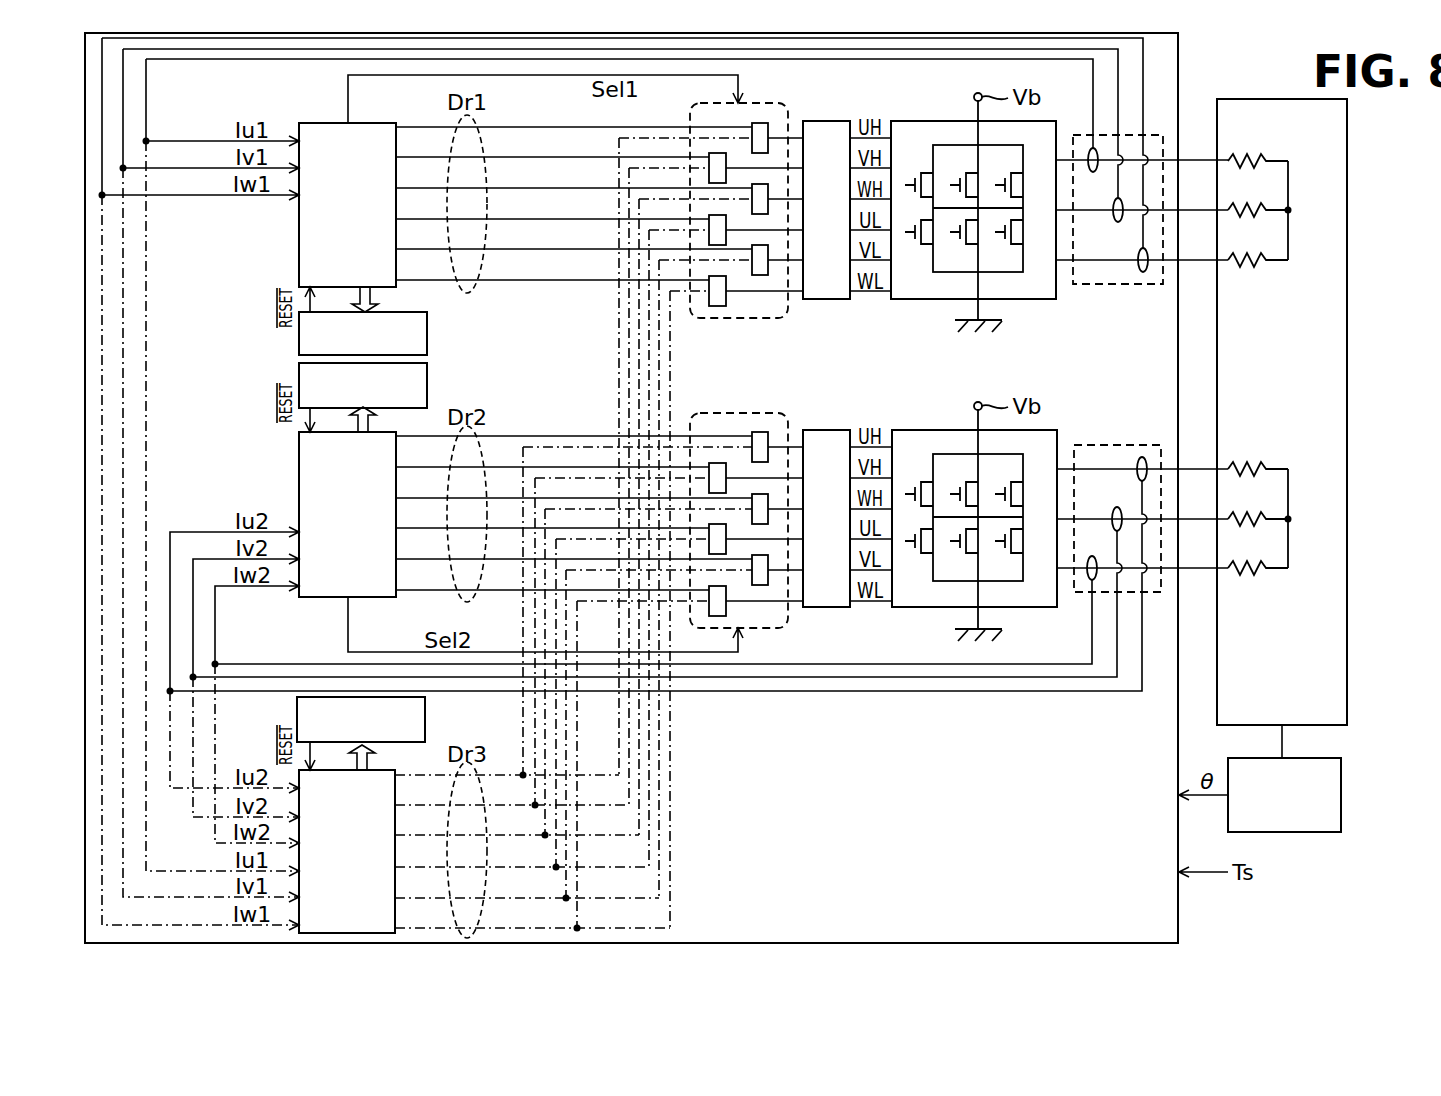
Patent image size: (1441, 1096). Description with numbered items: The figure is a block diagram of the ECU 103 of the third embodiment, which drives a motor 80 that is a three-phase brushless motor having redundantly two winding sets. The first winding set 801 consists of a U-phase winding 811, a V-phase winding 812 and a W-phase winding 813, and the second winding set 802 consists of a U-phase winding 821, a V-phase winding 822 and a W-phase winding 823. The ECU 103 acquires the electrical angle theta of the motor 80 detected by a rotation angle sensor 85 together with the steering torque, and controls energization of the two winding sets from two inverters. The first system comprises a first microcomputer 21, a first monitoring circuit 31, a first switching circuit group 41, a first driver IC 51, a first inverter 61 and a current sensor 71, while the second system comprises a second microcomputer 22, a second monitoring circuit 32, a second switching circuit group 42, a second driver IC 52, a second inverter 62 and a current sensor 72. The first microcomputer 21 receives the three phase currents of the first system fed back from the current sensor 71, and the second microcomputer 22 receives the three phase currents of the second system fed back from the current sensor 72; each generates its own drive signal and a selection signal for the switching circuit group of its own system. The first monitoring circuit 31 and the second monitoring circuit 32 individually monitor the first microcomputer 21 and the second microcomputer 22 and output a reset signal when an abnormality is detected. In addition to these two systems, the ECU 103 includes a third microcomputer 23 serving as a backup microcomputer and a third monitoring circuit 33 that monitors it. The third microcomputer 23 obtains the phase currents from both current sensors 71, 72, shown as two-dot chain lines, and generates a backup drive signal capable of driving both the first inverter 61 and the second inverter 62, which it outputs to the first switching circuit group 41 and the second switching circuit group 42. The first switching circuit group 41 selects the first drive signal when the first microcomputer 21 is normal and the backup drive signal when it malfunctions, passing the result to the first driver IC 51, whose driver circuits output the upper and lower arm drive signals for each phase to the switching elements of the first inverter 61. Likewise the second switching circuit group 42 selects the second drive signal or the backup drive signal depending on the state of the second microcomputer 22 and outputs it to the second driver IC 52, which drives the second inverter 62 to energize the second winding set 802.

The ECU 103 is at (1179, 70).
The motor 80 is at (1293, 99).
The first winding set 801 is at (1287, 233).
The U-phase winding 811 is at (1252, 154).
The V-phase winding 812 is at (1262, 205).
The W-phase winding 813 is at (1265, 256).
The second winding set 802 is at (1284, 540).
The U-phase winding 821 is at (1255, 463).
The V-phase winding 822 is at (1262, 514).
The W-phase winding 823 is at (1265, 564).
The rotation angle sensor 85 is at (1305, 832).
The first microcomputer 21 is at (299, 235).
The second microcomputer 22 is at (299, 458).
The third microcomputer 23 is at (391, 770).
The first monitoring circuit 31 is at (428, 327).
The second monitoring circuit 32 is at (428, 380).
The third monitoring circuit 33 is at (297, 710).
The first switching circuit group 41 is at (720, 318).
The second switching circuit group 42 is at (760, 413).
The first driver IC 51 is at (828, 121).
The second driver IC 52 is at (828, 430).
The first inverter 61 is at (935, 121).
The second inverter 62 is at (937, 430).
The current sensor 71 is at (1113, 284).
The current sensor 72 is at (1125, 445).